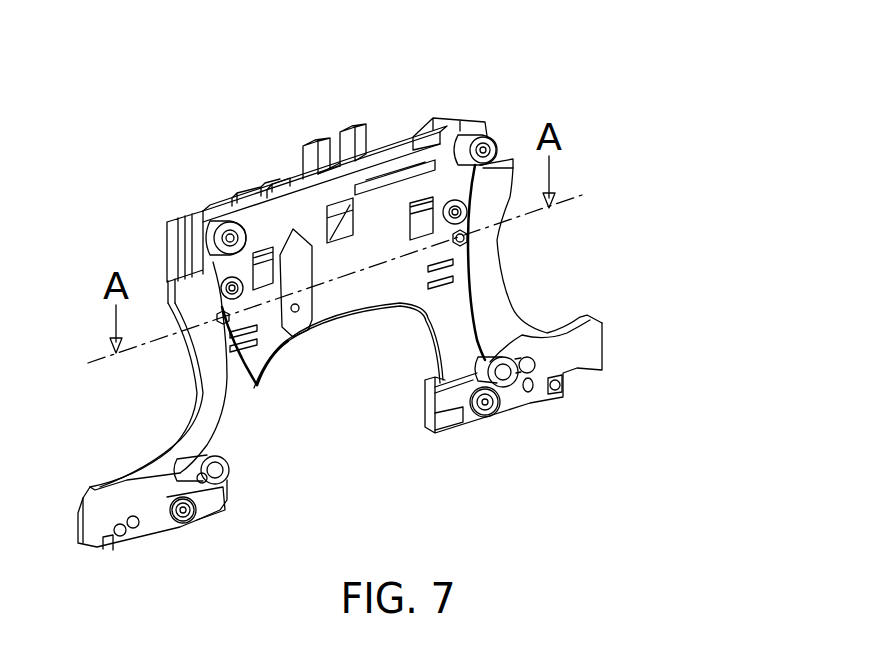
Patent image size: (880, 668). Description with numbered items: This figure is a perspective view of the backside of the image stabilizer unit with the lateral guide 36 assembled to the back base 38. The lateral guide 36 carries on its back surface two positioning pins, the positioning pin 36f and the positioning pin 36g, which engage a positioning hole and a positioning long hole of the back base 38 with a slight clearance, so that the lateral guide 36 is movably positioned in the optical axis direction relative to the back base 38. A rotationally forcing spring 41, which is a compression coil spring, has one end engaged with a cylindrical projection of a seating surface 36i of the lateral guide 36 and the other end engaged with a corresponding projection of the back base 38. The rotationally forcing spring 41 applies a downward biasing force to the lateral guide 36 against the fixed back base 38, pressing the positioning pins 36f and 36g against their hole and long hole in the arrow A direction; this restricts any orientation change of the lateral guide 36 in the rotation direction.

The lateral guide 36 is at (178, 232).
The rotationally forcing spring 41 is at (345, 215).
The seating surface 36i is at (450, 121).
The positioning pin 36g is at (472, 240).
The back base 38 is at (370, 325).
The positioning pin 36f is at (268, 387).